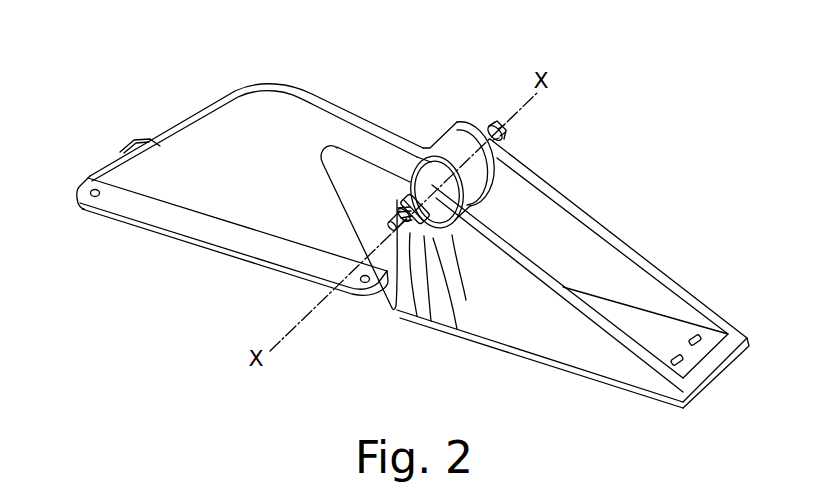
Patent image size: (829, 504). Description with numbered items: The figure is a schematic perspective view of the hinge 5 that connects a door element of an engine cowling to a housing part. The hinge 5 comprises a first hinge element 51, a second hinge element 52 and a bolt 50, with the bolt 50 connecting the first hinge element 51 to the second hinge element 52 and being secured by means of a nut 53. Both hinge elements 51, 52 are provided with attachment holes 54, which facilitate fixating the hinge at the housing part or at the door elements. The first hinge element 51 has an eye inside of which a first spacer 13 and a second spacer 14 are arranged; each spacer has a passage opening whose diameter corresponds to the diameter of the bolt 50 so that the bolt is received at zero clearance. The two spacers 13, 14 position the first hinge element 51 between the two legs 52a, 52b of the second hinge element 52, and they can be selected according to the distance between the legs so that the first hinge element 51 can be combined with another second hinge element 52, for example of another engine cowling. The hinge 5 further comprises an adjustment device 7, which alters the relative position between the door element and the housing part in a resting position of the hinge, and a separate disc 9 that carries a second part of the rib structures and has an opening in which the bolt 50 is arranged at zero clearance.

The hinge 5 is at (566, 110).
The adjustment device 7 is at (476, 119).
The disc 9 is at (430, 237).
The first spacer 13 is at (454, 122).
The second spacer 14 is at (424, 150).
The bolt 50 is at (395, 233).
The first hinge element 51 is at (247, 127).
The second hinge element 52 is at (650, 330).
The leg 52a is at (553, 210).
The leg 52b is at (578, 342).
The nut 53 is at (413, 233).
The attachment holes 54 is at (96, 200).